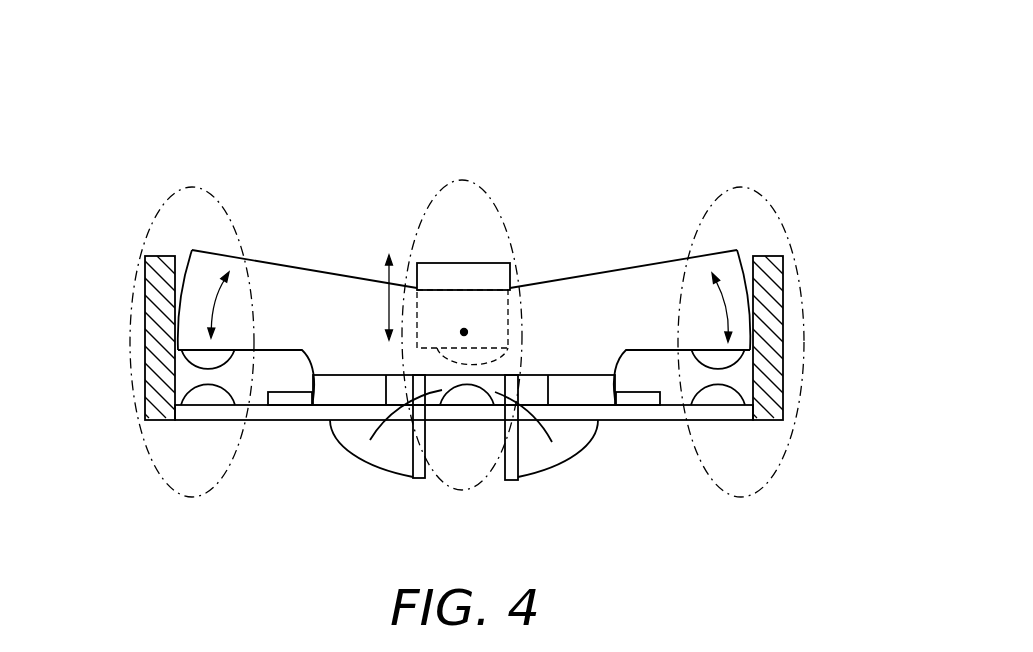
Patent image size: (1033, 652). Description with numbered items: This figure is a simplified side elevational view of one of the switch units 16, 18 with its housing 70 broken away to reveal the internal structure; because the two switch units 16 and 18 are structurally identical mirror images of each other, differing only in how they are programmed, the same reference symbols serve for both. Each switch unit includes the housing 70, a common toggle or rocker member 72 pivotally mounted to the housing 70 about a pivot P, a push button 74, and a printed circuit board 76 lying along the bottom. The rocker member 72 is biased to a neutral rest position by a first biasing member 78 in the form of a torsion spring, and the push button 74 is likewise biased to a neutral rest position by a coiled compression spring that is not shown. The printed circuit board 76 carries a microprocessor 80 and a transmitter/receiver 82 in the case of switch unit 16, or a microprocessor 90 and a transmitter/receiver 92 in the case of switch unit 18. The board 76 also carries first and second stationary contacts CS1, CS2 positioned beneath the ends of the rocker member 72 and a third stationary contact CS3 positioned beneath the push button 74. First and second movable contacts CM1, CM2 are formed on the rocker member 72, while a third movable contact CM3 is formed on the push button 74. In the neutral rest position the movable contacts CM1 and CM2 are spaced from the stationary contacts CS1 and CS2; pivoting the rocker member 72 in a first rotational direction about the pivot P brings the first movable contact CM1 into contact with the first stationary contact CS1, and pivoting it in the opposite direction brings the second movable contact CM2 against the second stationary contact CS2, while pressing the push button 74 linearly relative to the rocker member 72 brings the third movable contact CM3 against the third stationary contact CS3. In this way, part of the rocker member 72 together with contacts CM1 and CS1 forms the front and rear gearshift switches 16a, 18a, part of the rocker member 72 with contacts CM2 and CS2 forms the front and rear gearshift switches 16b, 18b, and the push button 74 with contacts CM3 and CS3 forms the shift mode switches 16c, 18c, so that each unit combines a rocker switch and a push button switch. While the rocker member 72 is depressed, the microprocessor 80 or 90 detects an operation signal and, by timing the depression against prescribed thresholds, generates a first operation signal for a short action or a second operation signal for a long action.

The switch unit 16 is at (467, 254).
The switch unit 18 is at (627, 92).
The front gearshift switch 16a is at (738, 309).
The rear gearshift switch 18a is at (708, 200).
The front gearshift switch 16b is at (236, 309).
The rear gearshift switch 18b is at (200, 190).
The shift mode switch 16c is at (514, 305).
The shift mode switch 18c is at (480, 187).
The housing 70 is at (134, 261).
The rocker member 72 is at (186, 243).
The push button 74 is at (516, 256).
The printed circuit board 76 is at (293, 431).
The first biasing member 78 is at (518, 477).
The microprocessor 80 is at (682, 346).
The microprocessor 90 is at (638, 350).
The transmitter/receiver 82 is at (269, 346).
The transmitter/receiver 92 is at (302, 350).
The pivot P is at (487, 324).
The first movable contact CM1 is at (740, 362).
The second movable contact CM2 is at (185, 362).
The third movable contact CM3 is at (512, 351).
The first stationary contact CS1 is at (684, 384).
The second stationary contact CS2 is at (148, 388).
The third stationary contact CS3 is at (445, 392).